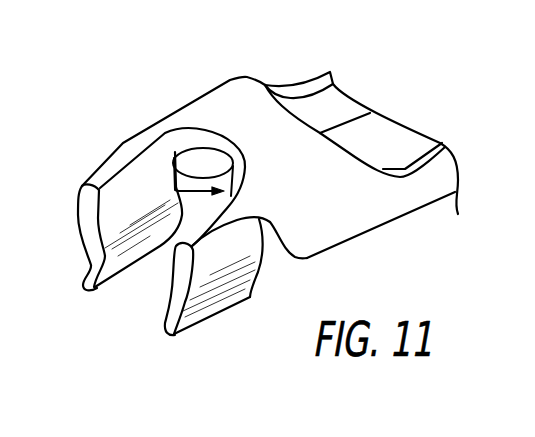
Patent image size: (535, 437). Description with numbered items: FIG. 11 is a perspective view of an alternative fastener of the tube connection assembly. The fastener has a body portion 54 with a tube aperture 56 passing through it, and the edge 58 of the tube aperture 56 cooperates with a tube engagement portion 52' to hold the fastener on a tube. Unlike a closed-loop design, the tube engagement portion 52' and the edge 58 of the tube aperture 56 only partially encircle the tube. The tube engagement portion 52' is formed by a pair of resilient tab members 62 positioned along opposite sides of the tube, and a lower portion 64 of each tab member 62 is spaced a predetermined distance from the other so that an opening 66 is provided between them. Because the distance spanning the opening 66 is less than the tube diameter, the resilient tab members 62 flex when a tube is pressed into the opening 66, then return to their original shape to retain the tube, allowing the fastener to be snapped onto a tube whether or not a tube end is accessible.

The tube engagement portion 52' is at (159, 216).
The body portion 54 is at (242, 98).
The tube aperture 56 is at (183, 180).
The edge 58 is at (208, 141).
The resilient tab member 62 is at (122, 253).
The lower portion 64 is at (161, 257).
The opening 66 is at (100, 338).